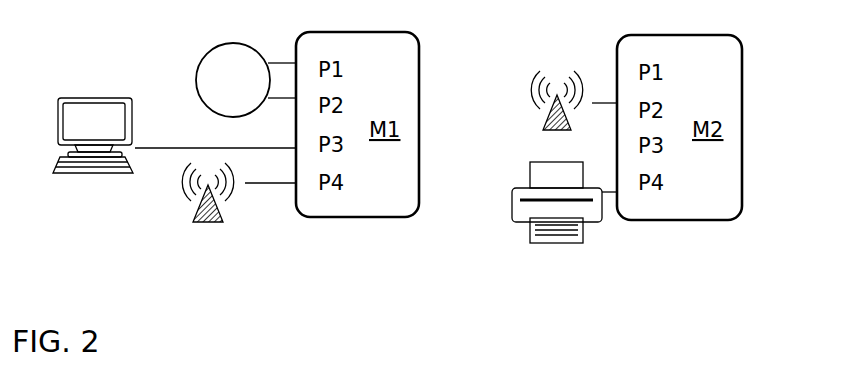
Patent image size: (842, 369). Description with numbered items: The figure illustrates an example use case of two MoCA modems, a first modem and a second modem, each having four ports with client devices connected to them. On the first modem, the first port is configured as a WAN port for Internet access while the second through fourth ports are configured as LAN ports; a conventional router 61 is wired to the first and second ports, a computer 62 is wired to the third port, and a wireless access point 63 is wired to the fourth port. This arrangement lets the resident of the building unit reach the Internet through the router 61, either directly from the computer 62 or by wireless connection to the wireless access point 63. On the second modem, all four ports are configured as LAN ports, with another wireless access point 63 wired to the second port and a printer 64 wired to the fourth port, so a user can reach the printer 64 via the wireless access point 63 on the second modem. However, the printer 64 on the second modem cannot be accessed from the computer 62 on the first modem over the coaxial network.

The router 61 is at (217, 43).
The computer 62 is at (90, 98).
The wireless access point 63 is at (200, 210).
The printer 64 is at (512, 222).